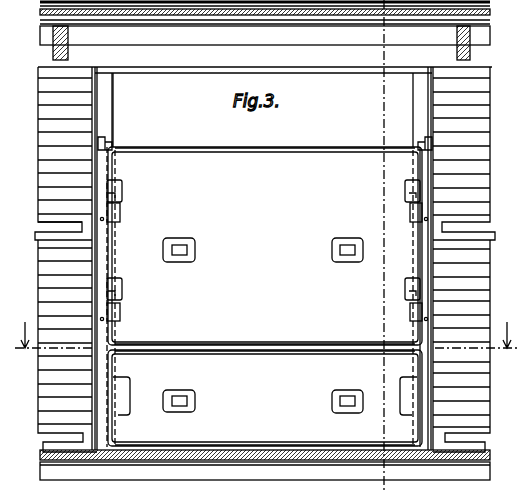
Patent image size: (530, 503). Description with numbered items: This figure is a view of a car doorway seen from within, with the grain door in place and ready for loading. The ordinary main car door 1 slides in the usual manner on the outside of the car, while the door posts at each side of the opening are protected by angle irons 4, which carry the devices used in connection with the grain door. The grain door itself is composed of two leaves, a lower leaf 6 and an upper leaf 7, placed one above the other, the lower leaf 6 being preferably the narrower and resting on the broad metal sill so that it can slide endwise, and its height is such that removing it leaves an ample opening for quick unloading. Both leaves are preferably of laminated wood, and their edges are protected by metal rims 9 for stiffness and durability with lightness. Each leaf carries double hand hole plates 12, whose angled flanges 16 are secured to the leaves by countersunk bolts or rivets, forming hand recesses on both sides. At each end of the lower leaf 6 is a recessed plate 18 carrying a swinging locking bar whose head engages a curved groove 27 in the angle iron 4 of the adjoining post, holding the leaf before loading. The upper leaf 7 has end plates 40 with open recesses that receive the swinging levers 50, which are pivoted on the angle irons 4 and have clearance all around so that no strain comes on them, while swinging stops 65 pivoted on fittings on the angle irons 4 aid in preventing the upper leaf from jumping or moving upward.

The main car door 1 is at (529, 270).
The angle iron 4 is at (112, 98).
The lower leaf 6 is at (265, 398).
The upper leaf 7 is at (264, 297).
The metal rim 9 is at (306, 153).
The double hand hole plate 12 is at (177, 238).
The angled flange 16 is at (270, 344).
The recessed plate 18 is at (129, 418).
The curved groove 27 is at (517, 389).
The plate 40 is at (121, 214).
The swinging lever 50 is at (118, 197).
The swinging stop 65 is at (113, 148).